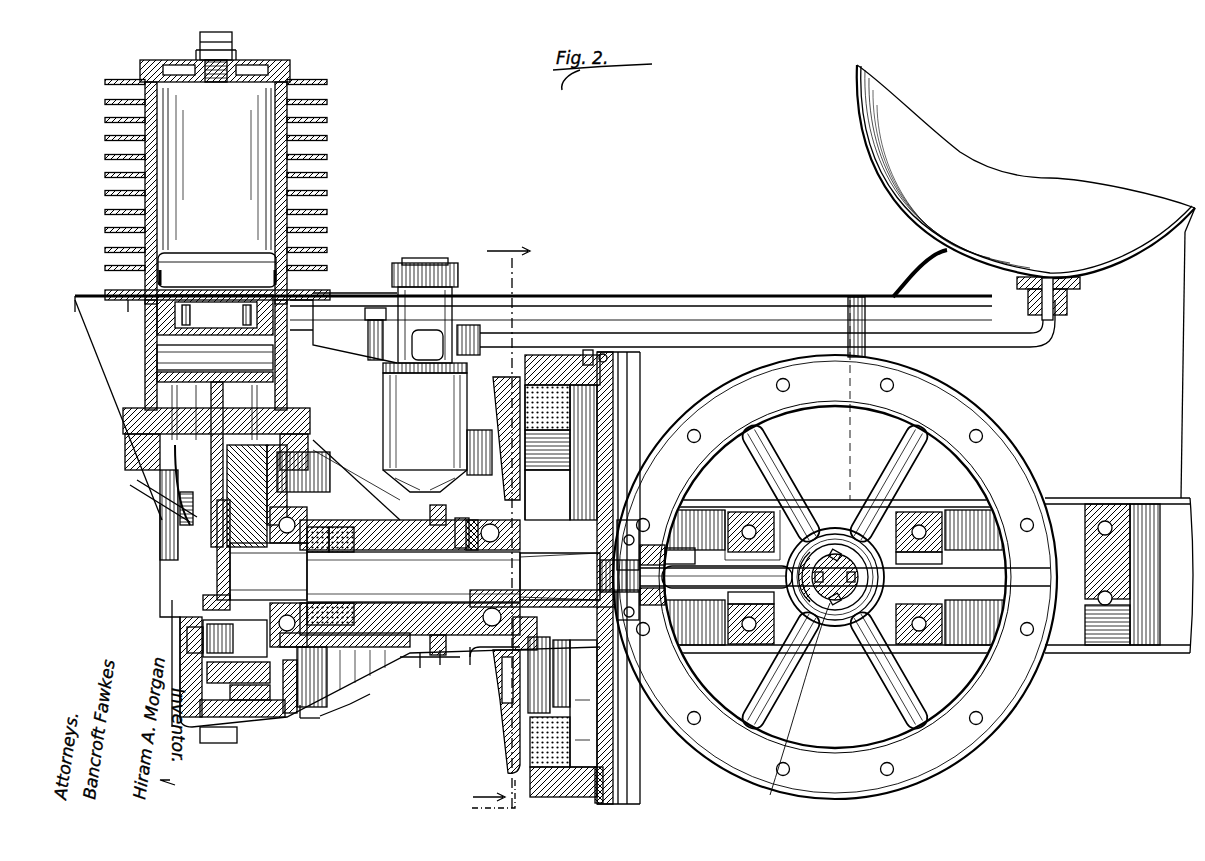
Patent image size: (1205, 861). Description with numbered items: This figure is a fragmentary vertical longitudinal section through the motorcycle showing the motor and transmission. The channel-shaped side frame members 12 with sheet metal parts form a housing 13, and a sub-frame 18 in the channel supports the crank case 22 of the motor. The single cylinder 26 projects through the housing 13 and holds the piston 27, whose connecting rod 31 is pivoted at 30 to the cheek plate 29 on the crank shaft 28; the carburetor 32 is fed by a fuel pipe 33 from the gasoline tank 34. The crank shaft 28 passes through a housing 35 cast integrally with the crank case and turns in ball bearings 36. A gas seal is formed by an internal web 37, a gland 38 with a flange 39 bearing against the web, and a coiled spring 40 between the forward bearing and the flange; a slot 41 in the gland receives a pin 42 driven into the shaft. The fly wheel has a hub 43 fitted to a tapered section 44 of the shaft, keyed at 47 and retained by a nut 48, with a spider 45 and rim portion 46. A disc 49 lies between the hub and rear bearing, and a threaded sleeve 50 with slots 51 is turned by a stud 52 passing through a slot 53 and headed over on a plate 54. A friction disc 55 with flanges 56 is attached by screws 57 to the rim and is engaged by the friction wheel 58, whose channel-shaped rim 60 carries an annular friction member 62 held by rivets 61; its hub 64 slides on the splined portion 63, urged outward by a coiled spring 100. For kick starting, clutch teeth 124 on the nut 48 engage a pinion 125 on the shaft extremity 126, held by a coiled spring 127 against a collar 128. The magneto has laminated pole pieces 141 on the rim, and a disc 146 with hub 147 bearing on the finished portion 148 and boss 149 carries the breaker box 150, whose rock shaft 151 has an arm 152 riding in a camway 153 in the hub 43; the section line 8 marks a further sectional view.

The section line 8 is at (500, 517).
The side frame members 12 is at (1051, 658).
The housing 13 is at (540, 296).
The sub-frame 18 is at (930, 650).
The crank case 22 is at (250, 718).
The cylinder 26 is at (290, 170).
The piston 27 is at (295, 262).
The crank shaft 28 is at (390, 652).
The cheek plate 29 is at (235, 500).
The pivot 30 is at (333, 655).
The piston connecting rod 31 is at (215, 482).
The carburetor 32 is at (395, 400).
The fuel pipe 33 is at (738, 300).
The gasoline tank 34 is at (890, 200).
The housing 35 is at (377, 650).
The ball bearings 36 is at (318, 652).
The internal web 37 is at (383, 652).
The gland 38 is at (350, 660).
The flange 39 is at (357, 655).
The coiled spring 40 is at (340, 657).
The slot 41 is at (302, 560).
The pin 42 is at (340, 548).
The hub 43 is at (615, 720).
The tapered section 44 is at (622, 700).
The spider 45 is at (625, 760).
The rim portion 46 is at (640, 800).
The key 47 is at (675, 577).
The nut 48 is at (655, 508).
The disc 49 is at (510, 735).
The sleeve 50 is at (470, 657).
The slots 51 is at (410, 657).
The stud 52 is at (395, 548).
The slot 53 is at (358, 550).
The plate 54 is at (460, 518).
The friction disc 55 is at (612, 412).
The flanges 56 is at (586, 352).
The screws 57 is at (600, 355).
The friction wheel 58 is at (842, 581).
The channel-shaped rim 60 is at (1008, 712).
The rivets 61 is at (992, 392).
The annular friction member 62 is at (1022, 690).
The splined portion 63 is at (842, 600).
The hub 64 is at (832, 598).
The coiled spring 100 is at (770, 795).
The clutch teeth 124 is at (665, 522).
The pinion 125 is at (740, 483).
The extremity of the crank shaft 126 is at (745, 515).
The coiled spring 127 is at (755, 650).
The collar 128 is at (748, 640).
The pole pieces 141 is at (560, 352).
The disc 146 is at (500, 760).
The hub 147 is at (503, 706).
The finished portion 148 is at (440, 550).
The boss 149 is at (470, 478).
The box 150 is at (470, 440).
The rock shaft 151 is at (535, 495).
The arm 152 is at (540, 505).
The camway 153 is at (500, 552).